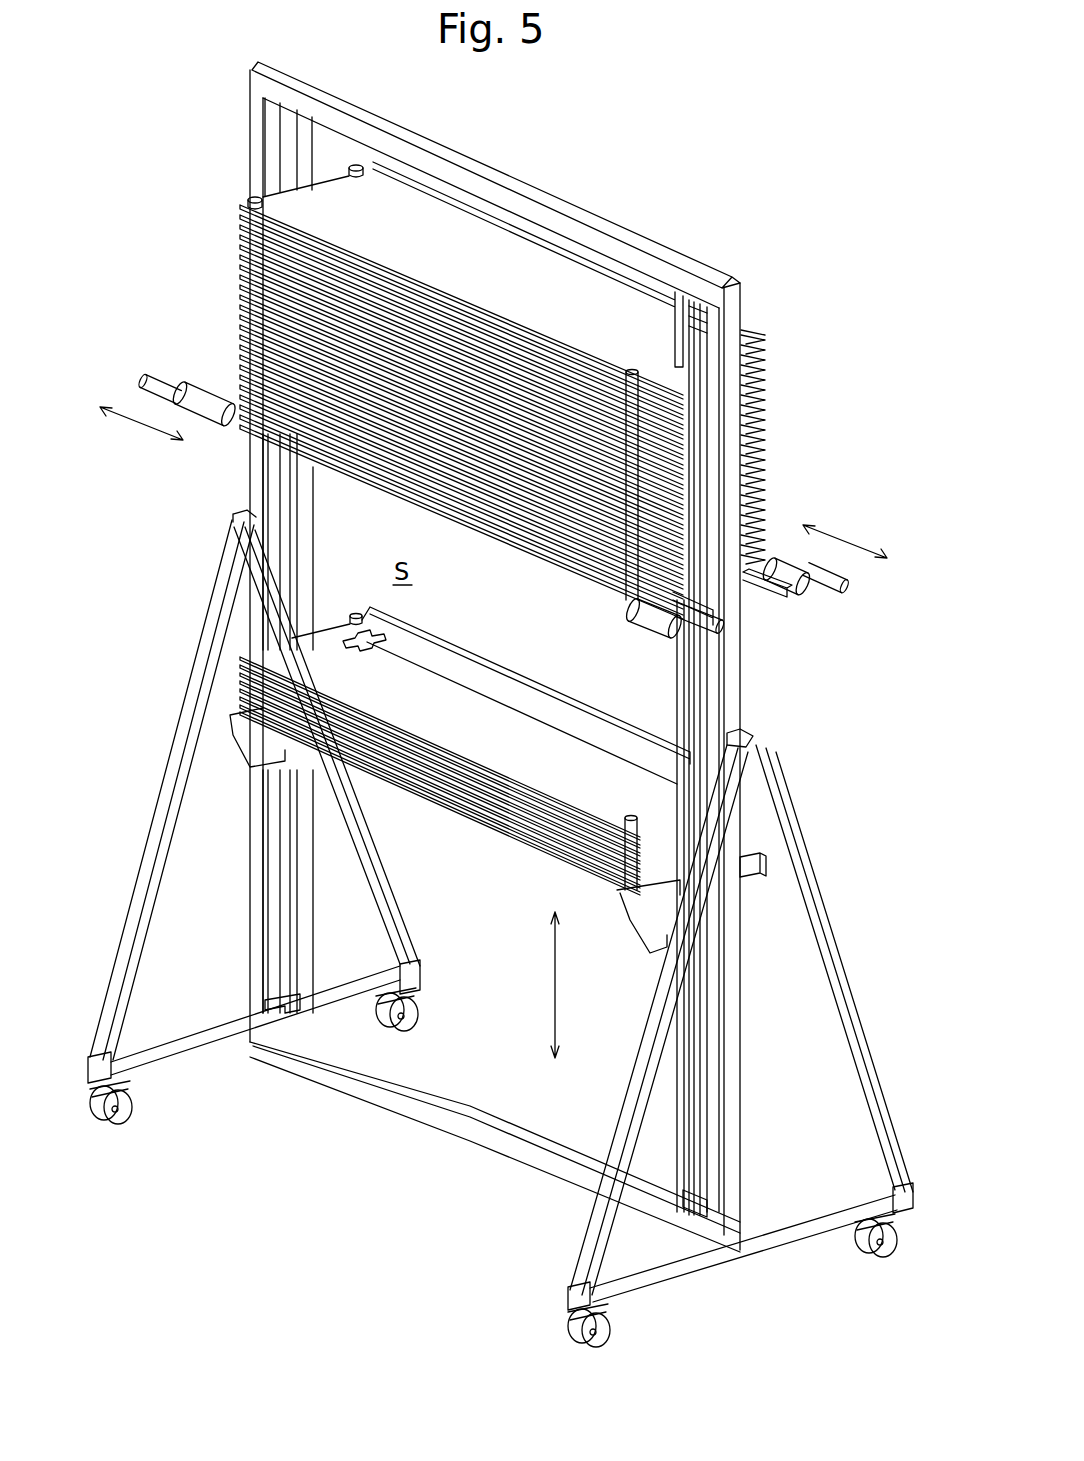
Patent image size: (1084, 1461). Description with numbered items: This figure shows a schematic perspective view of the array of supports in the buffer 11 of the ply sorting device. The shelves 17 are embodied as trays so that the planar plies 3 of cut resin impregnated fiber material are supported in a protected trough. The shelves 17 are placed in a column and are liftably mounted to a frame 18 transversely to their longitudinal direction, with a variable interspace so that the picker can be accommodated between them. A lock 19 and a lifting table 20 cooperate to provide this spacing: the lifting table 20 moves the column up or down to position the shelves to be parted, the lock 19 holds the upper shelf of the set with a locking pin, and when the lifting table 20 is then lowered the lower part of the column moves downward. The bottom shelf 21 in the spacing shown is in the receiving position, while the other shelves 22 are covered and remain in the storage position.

The buffer 11 is at (770, 262).
The shelves 17 is at (316, 314).
The other shelves 22 is at (770, 432).
The bottom shelf 21 is at (285, 652).
The planar plies 3 is at (375, 680).
The lock 19 is at (848, 607).
The lifting table 20 is at (750, 877).
The frame 18 is at (850, 1043).